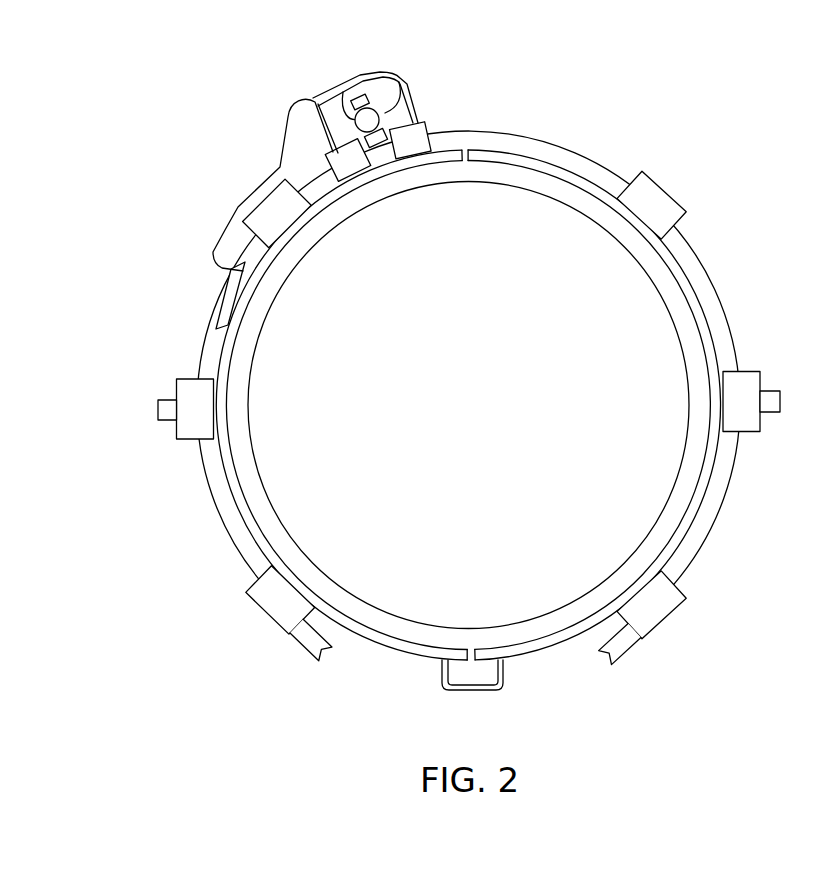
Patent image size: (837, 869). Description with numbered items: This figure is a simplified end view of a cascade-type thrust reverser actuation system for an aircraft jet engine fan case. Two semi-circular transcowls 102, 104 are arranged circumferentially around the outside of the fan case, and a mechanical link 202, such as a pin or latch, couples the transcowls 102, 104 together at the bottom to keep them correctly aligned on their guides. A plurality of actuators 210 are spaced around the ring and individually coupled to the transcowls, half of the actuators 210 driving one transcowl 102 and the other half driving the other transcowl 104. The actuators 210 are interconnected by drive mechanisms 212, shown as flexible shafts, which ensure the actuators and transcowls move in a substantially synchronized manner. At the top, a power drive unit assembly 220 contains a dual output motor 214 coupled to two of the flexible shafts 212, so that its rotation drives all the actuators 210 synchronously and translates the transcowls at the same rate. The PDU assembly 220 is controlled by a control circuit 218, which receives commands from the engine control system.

The transcowl 102 is at (702, 482).
The transcowl 104 is at (248, 487).
The mechanical link 202 is at (483, 696).
The actuators 210 is at (258, 202).
The drive mechanisms (flexible shafts) 212 is at (540, 132).
The dual output motor 214 is at (408, 94).
The control circuit 218 is at (215, 300).
The power drive unit (PDU) assembly 220 is at (341, 147).